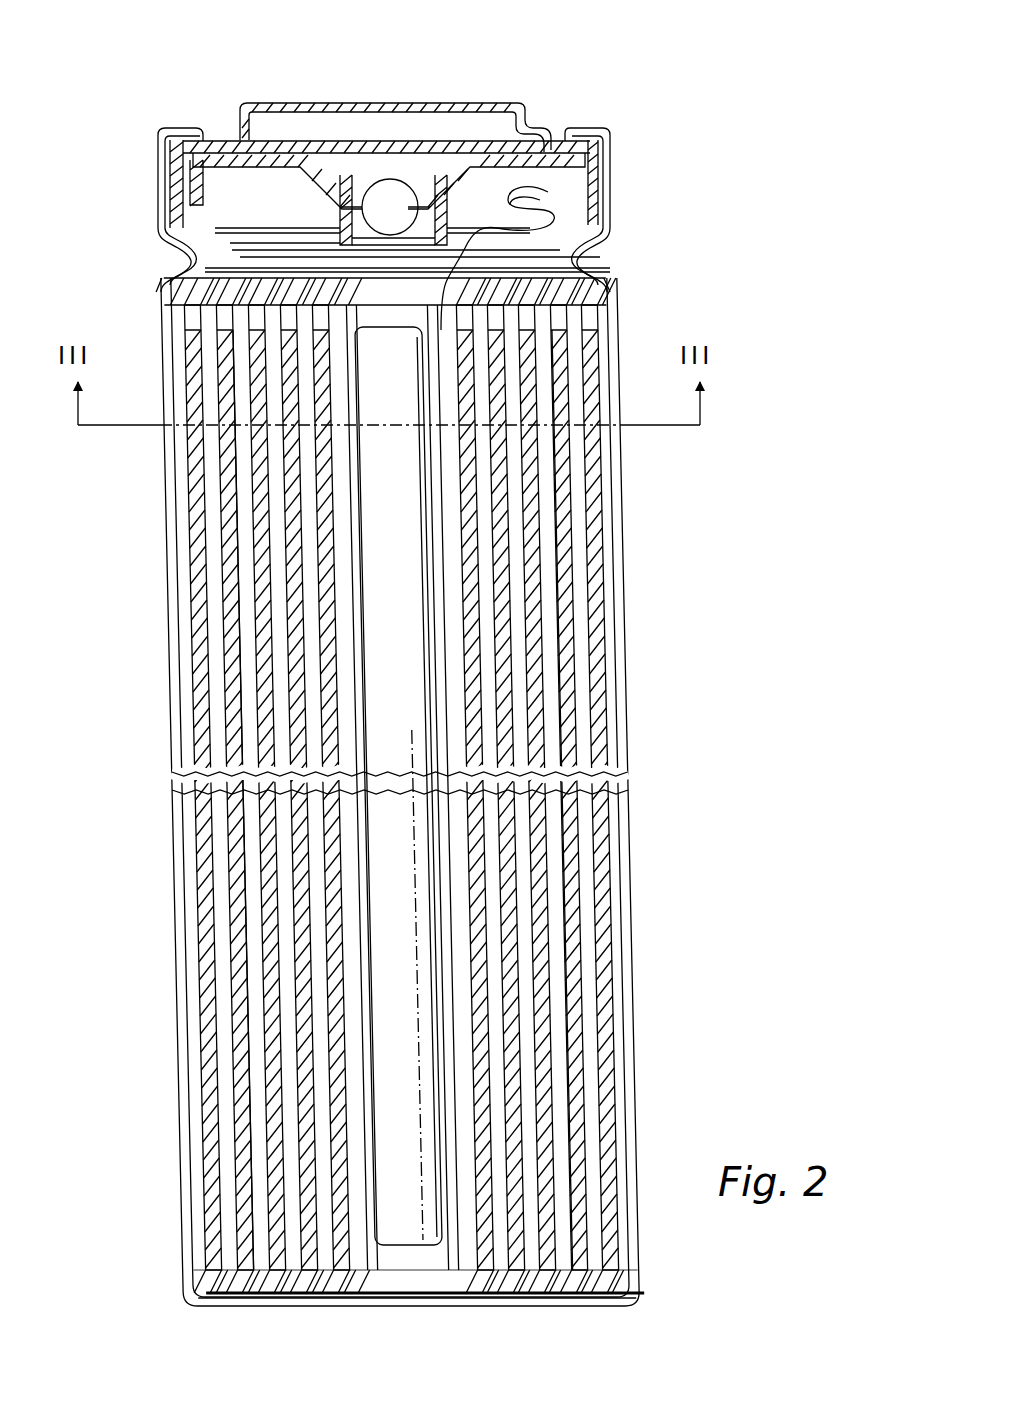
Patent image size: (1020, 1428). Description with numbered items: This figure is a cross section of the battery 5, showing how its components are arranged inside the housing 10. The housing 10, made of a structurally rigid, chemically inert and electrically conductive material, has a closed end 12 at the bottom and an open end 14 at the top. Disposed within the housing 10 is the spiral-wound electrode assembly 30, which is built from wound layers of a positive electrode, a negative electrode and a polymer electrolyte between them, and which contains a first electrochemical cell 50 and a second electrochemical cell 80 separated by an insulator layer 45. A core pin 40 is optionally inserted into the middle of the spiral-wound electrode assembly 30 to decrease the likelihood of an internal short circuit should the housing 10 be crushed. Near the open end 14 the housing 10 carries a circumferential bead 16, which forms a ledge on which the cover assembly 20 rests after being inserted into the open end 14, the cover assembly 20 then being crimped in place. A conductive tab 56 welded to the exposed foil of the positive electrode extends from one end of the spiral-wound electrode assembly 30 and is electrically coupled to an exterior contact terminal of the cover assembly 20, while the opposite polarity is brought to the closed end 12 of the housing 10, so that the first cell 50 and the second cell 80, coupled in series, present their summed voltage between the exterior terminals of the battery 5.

The battery 5 is at (379, 51).
The housing 10 is at (633, 990).
The closed end 12 is at (600, 1310).
The open end 14 is at (552, 130).
The circumferential bead 16 is at (176, 264).
The cover assembly 20 is at (268, 81).
The spiral-wound electrode assembly 30 is at (592, 1085).
The core pin 40 is at (410, 1200).
The insulator layer 45 is at (555, 715).
The first electrochemical cell 50 is at (522, 658).
The conductive tab 56 is at (513, 200).
The second electrochemical cell 80 is at (585, 865).